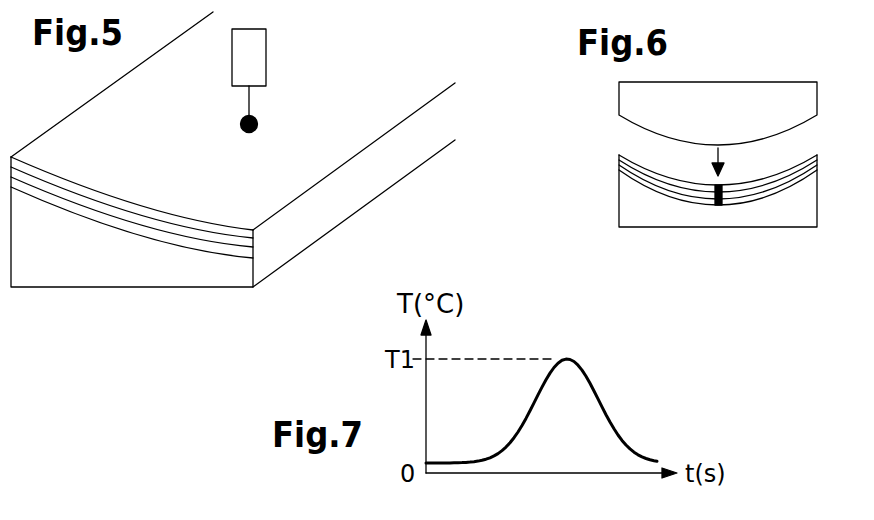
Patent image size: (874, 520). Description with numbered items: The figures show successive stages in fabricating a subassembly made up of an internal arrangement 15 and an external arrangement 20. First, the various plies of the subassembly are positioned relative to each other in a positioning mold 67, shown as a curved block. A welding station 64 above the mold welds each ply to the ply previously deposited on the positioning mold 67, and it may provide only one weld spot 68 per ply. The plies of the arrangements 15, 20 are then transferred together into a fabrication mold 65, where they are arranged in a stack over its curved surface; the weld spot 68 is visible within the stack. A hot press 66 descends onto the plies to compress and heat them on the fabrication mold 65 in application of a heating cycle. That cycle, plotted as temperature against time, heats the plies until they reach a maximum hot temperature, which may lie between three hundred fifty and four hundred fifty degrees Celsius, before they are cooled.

In FIG. 6, the internal arrangement 15 is at (612, 157).
In FIG. 6, the external arrangement 20 is at (612, 172).
In FIG. 5, the welding station 64 is at (267, 45).
In FIG. 6, the fabrication mold 65 is at (790, 227).
In FIG. 6, the hot press 66 is at (788, 98).
In FIG. 5, the positioning mold 67 is at (72, 253).
In FIG. 5, the weld spot 68 is at (241, 122).
In FIG. 6, the weld spot 68 is at (722, 207).